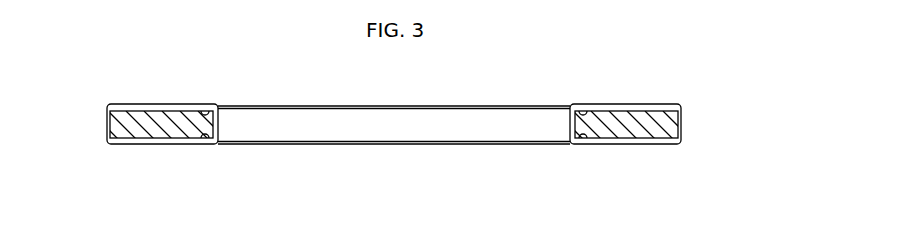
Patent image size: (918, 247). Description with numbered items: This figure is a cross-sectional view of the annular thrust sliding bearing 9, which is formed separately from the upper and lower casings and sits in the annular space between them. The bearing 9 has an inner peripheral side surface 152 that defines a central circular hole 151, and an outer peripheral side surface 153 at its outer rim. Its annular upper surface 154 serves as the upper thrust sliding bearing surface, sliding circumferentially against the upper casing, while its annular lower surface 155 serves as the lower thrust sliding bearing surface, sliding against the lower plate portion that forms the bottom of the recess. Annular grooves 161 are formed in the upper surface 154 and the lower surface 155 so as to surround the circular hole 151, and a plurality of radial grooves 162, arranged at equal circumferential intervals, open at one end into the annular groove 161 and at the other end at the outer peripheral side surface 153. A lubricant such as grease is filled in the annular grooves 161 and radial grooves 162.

The thrust sliding bearing 9 is at (640, 101).
The central circular hole 151 is at (410, 124).
The inner peripheral side surface 152 is at (347, 127).
The outer peripheral side surface 153 is at (682, 128).
The annular upper surface 154 is at (282, 105).
The annular lower surface 155 is at (192, 143).
The annular groove 161 is at (204, 107).
The radial grooves 162 is at (130, 107).